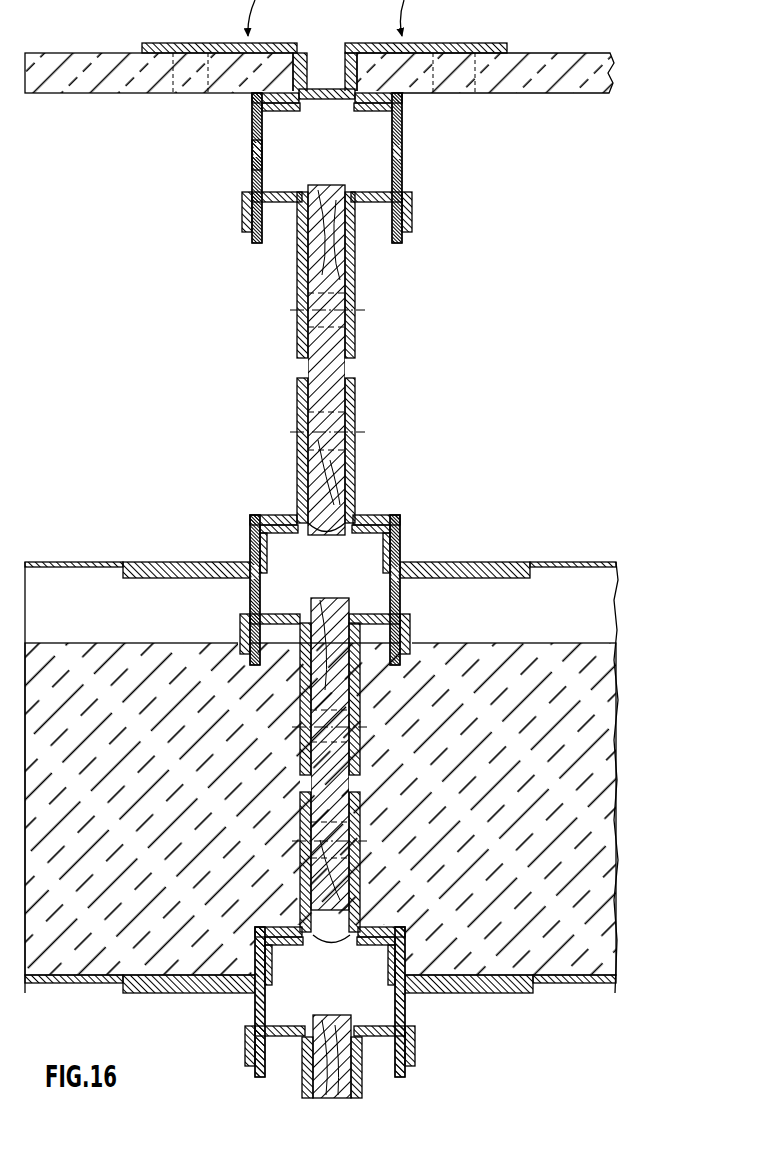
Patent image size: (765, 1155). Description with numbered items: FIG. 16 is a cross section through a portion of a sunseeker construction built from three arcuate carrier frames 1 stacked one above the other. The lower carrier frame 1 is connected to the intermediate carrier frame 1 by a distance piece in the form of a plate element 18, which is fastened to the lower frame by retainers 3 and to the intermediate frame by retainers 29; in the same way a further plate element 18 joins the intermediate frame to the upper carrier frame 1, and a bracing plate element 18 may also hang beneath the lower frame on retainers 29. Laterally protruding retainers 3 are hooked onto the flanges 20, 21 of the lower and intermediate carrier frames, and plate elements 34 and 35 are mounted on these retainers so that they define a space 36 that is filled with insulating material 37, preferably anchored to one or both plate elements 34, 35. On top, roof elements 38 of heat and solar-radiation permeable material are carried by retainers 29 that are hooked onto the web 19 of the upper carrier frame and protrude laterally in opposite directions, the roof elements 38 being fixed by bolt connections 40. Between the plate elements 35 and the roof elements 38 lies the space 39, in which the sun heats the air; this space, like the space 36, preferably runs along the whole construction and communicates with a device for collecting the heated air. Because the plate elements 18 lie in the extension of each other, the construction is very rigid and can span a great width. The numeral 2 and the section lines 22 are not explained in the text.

The carrier frame 1 is at (404, 165).
The housing wall 2 is at (252, 152).
The retainer 3 is at (150, 560).
The plate element 18 is at (332, 352).
The web 19 is at (326, 90).
The flange 20 is at (252, 128).
The flange 21 is at (402, 124).
The sleeve section 22 is at (363, 305).
The retainer 29 is at (296, 272).
The plate element 34 is at (592, 983).
The plate element 35 is at (565, 562).
The space 36 is at (600, 600).
The insulating material 37 is at (600, 870).
The roof element 38 is at (88, 60).
The space 39 is at (545, 118).
The bolt connection 40 is at (190, 98).